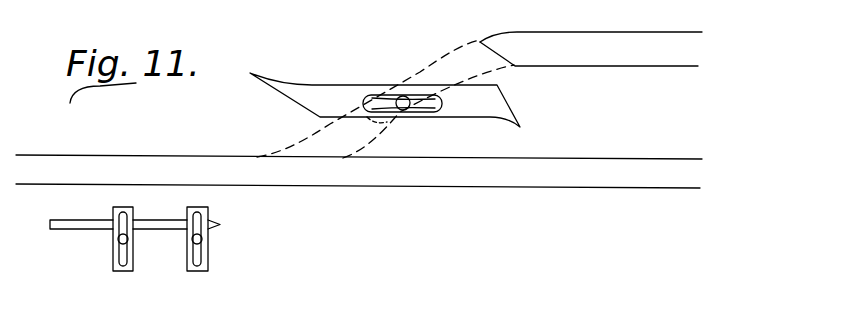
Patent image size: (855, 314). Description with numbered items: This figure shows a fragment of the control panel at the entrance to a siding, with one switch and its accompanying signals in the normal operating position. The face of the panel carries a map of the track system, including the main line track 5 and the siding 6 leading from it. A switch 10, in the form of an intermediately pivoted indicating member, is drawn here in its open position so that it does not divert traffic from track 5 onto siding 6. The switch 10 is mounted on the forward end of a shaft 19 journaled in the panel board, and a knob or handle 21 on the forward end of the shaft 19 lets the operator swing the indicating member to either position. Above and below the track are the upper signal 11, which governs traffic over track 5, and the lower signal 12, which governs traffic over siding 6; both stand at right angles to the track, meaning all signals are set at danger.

The main line track 5 is at (609, 158).
The siding 6 is at (612, 63).
The switch 10 is at (315, 96).
The signal 11 is at (203, 266).
The signal 12 is at (113, 265).
The shaft 19 is at (403, 100).
The knob or handle 21 is at (373, 95).